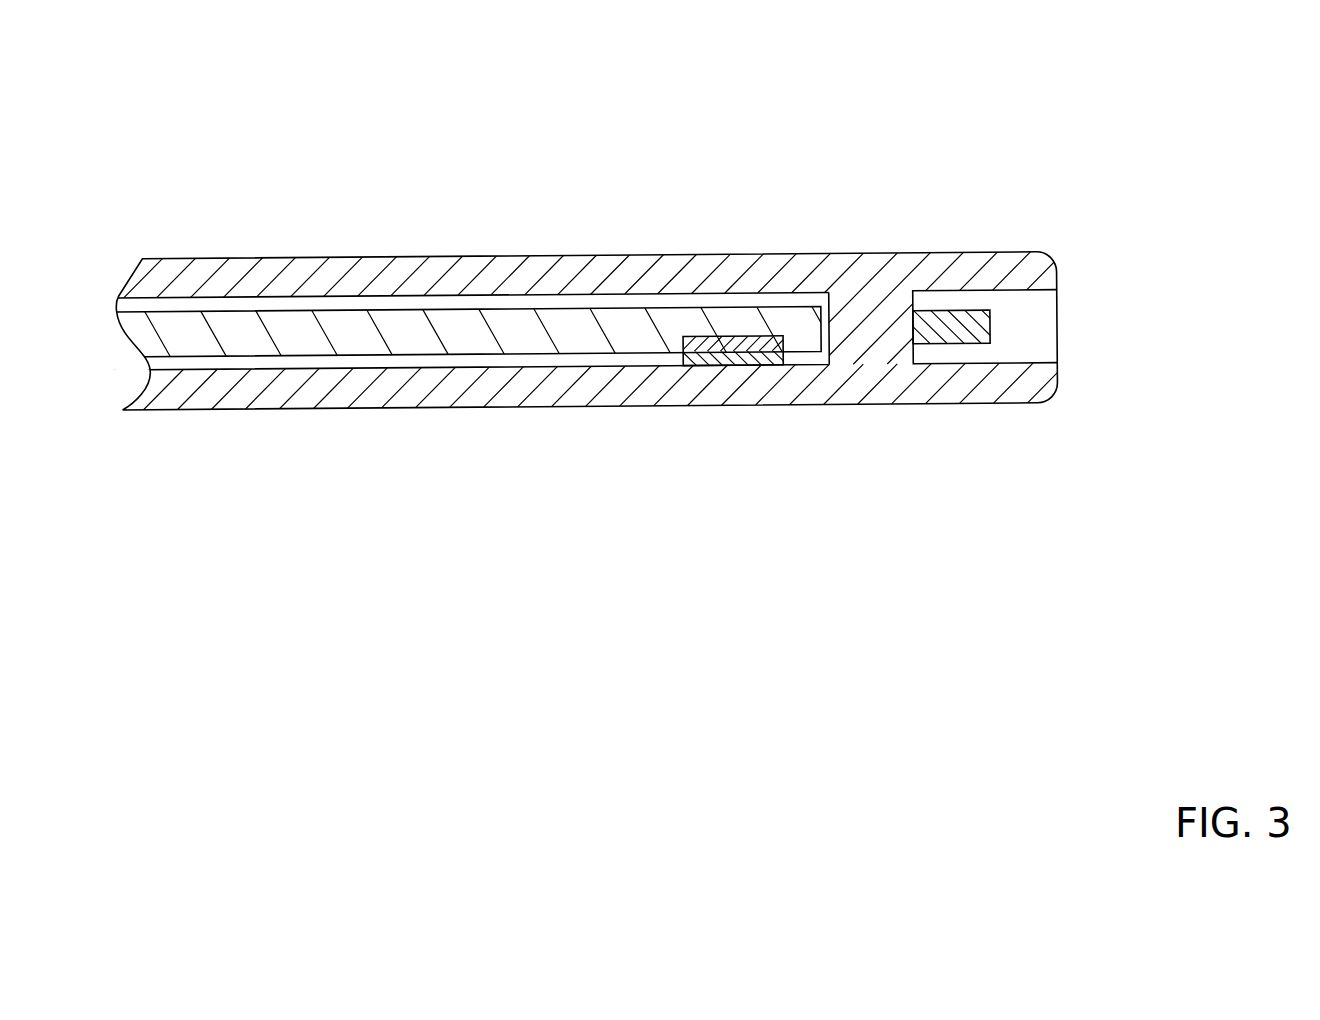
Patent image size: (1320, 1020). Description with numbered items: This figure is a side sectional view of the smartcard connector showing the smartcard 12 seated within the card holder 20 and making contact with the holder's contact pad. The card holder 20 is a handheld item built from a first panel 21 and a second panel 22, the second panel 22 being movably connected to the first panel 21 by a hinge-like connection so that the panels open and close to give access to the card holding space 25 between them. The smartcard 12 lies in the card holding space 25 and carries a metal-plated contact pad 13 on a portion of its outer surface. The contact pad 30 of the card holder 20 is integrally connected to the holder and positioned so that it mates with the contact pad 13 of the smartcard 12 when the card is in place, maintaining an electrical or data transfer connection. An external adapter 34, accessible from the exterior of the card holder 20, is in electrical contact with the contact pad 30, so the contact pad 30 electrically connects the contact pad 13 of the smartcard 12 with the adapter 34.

The card holder 20 is at (973, 165).
The first panel 21 is at (547, 272).
The second panel 22 is at (480, 388).
The card holding space 25 is at (417, 303).
The smartcard 12 is at (583, 333).
The contact pad 13 is at (703, 345).
The contact pad 30 is at (733, 355).
The external adapter 34 is at (990, 328).